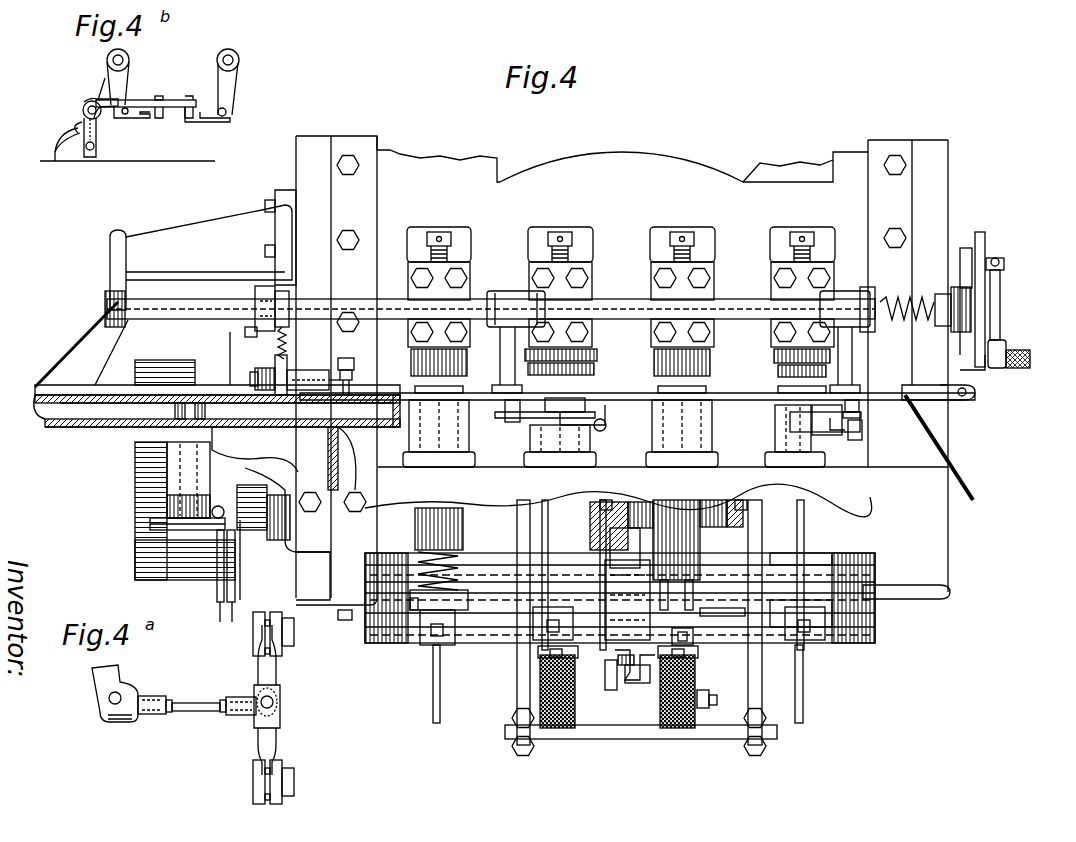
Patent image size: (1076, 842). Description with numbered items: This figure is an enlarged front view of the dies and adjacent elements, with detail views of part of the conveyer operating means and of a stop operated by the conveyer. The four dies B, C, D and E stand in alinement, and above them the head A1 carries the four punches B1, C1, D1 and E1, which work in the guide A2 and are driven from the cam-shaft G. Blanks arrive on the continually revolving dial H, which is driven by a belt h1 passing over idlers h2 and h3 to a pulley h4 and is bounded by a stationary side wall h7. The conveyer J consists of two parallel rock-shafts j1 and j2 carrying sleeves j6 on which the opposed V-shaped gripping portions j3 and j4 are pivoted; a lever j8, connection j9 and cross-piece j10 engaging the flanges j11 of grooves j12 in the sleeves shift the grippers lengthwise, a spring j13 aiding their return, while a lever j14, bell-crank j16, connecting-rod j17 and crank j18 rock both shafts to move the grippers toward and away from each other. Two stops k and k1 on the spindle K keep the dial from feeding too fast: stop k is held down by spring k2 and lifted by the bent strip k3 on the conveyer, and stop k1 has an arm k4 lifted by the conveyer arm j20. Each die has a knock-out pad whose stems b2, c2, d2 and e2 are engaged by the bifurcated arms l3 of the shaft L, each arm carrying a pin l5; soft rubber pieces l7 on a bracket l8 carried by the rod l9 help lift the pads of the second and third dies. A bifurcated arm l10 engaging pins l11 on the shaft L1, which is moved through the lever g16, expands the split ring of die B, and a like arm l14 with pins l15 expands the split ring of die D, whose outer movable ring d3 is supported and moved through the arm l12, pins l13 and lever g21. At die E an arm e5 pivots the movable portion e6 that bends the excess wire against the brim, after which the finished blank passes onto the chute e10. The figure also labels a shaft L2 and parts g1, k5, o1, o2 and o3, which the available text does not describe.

In FIG. 4, the head A1 is at (945, 215).
In FIG. 4, the guide A2 is at (368, 148).
In FIG. 4, the first die B is at (425, 445).
In FIG. 4, the punch B1 is at (470, 274).
In FIG. 4, the second die C is at (566, 430).
In FIG. 4, the punch C1 is at (588, 295).
In FIG. 4, the third die D is at (700, 400).
In FIG. 4, the punch D1 is at (702, 295).
In FIG. 4, the fourth die E is at (822, 435).
In FIG. 4, the punch E1 is at (800, 278).
In FIG. 4, the cam-shaft G is at (330, 600).
In FIG. 4, the dial H is at (140, 418).
In FIG. 4, the conveyer J is at (632, 322).
In FIG. 4B, the spindle K is at (82, 110).
In FIG. 4, the spindle K is at (352, 380).
In FIG. 4, the shaft L is at (495, 585).
In FIG. 4, the shaft L1 is at (835, 608).
In FIG. 4, the lower bar L2 is at (820, 565).
In FIG. 4, the stem b2 is at (432, 668).
In FIG. 4, the stem c2 is at (605, 560).
In FIG. 4, the stem d2 is at (658, 685).
In FIG. 4, the outer vertically-movable ring d3 is at (722, 598).
In FIG. 4, the stem e2 is at (803, 690).
In FIG. 4, the arm e5 is at (850, 432).
In FIG. 4, the movable portion e6 is at (862, 410).
In FIG. 4, the chute e10 is at (962, 472).
In FIG. 4, the gear g1 is at (143, 505).
In FIG. 4, the lever g16 is at (708, 708).
In FIG. 4, the lever g21 is at (630, 675).
In FIG. 4, the belt h1 is at (228, 622).
In FIG. 4, the idler h2 is at (247, 538).
In FIG. 4, the idler h3 is at (216, 562).
In FIG. 4, the pulley h4 is at (175, 530).
In FIG. 4, the stationary side wall h7 is at (126, 385).
In FIG. 4B, the rock-shaft j1 is at (239, 60).
In FIG. 4, the rock-shaft j1 is at (232, 324).
In FIG. 4B, the rock-shaft j2 is at (107, 60).
In FIG. 4B, the gripping portions j3 is at (208, 124).
In FIG. 4, the gripping portions j3 is at (455, 400).
In FIG. 4B, the gripping portions j4 is at (140, 120).
In FIG. 4, the sleeves j6 is at (752, 302).
In FIG. 4A, the lever j8 is at (105, 683).
In FIG. 4, the lever j8 is at (86, 340).
In FIG. 4A, the connection j9 is at (198, 712).
In FIG. 4A, the cross-piece j10 is at (278, 712).
In FIG. 4A, the flanges j11 is at (284, 642).
In FIG. 4, the flanges j11 is at (272, 334).
In FIG. 4A, the grooves j12 is at (262, 630).
In FIG. 4, the grooves j12 is at (268, 297).
In FIG. 4, the spring j13 is at (903, 299).
In FIG. 4, the lever j14 is at (968, 375).
In FIG. 4, the bell-crank j16 is at (987, 258).
In FIG. 4, the connecting-rod j17 is at (1002, 312).
In FIG. 4, the crank j18 is at (1010, 368).
In FIG. 4B, the arm j20 is at (78, 134).
In FIG. 4, the stop k is at (288, 378).
In FIG. 4B, the stop k1 is at (172, 99).
In FIG. 4, the stop k1 is at (352, 372).
In FIG. 4, the spring k2 is at (325, 312).
In FIG. 4, the strip of bent metal k3 is at (305, 402).
In FIG. 4B, the arm k4 is at (96, 132).
In FIG. 4, the shaft k5 is at (165, 435).
In FIG. 4, the bifurcated arms l3 is at (432, 625).
In FIG. 4, the pin l5 is at (466, 522).
In FIG. 4, the rubber piece l7 is at (562, 730).
In FIG. 4, the bracket l8 is at (630, 740).
In FIG. 4, the rod l9 is at (515, 700).
In FIG. 4, the bifurcated arm l10 is at (462, 600).
In FIG. 4, the pins l11 is at (458, 585).
In FIG. 4, the bifurcated arm l12 is at (657, 585).
In FIG. 4, the pins l13 is at (650, 500).
In FIG. 4, the bifurcated arm l14 is at (590, 545).
In FIG. 4, the pins l15 is at (655, 598).
In FIG. 4, the pivot o1 is at (590, 420).
In FIG. 4, the lever o2 is at (565, 405).
In FIG. 4, the link o3 is at (512, 425).